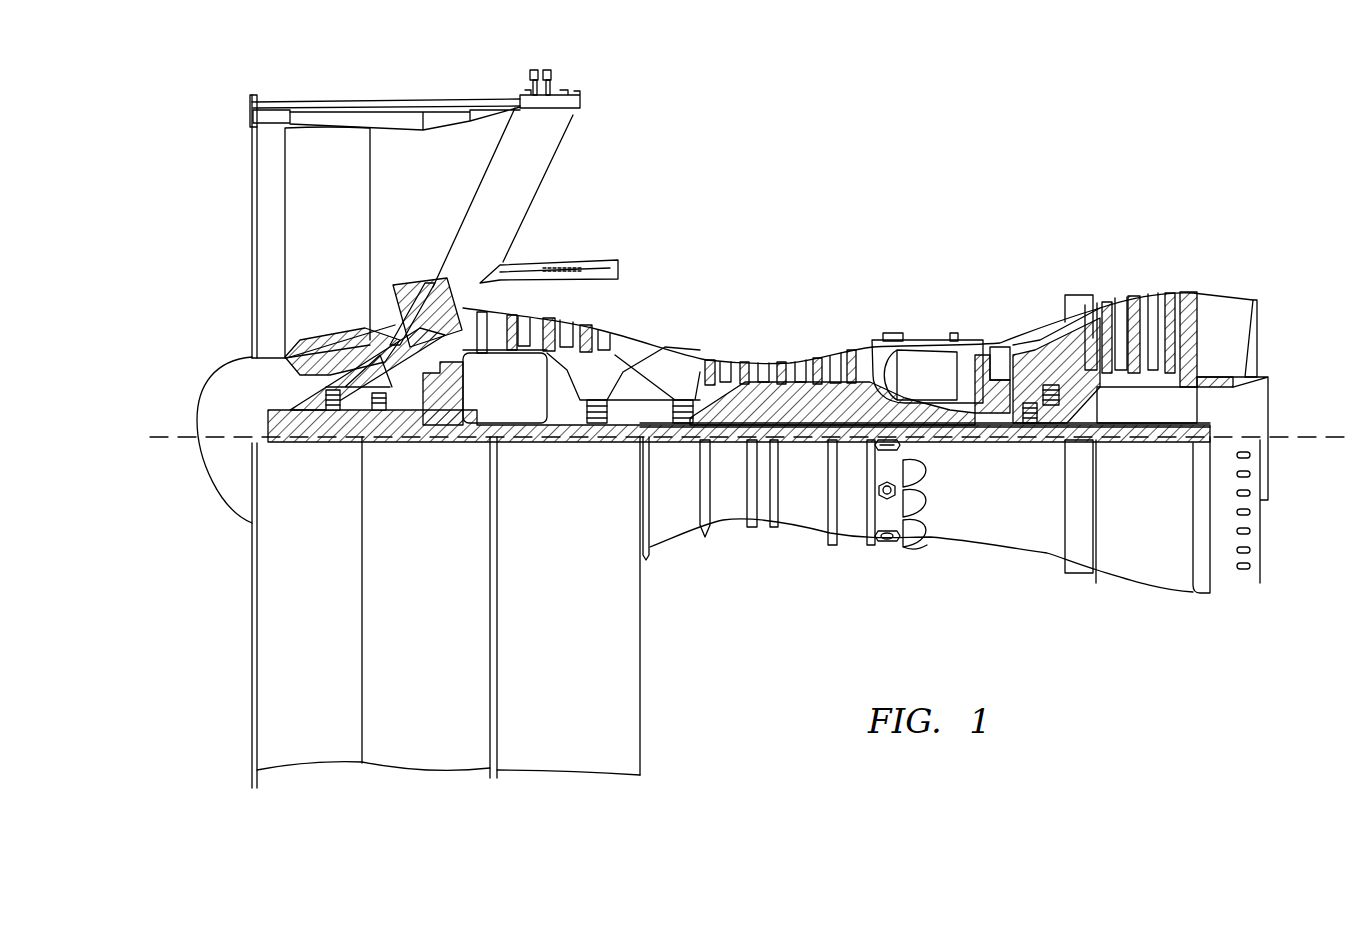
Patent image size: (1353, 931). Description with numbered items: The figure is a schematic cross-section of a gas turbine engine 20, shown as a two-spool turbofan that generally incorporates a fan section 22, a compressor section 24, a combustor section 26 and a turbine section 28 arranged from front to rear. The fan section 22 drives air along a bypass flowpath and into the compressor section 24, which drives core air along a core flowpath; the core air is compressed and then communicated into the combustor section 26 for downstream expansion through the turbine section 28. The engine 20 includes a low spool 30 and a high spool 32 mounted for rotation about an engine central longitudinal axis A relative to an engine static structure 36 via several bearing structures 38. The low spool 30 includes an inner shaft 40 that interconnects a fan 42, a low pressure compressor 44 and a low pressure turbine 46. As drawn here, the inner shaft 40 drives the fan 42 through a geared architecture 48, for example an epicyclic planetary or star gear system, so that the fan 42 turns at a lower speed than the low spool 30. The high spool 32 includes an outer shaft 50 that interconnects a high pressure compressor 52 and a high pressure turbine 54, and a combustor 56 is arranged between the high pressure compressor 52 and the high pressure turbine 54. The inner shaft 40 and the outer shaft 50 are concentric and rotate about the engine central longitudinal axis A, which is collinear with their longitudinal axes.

The gas turbine engine 20 is at (962, 143).
The fan section 22 is at (244, 83).
The compressor section 24 is at (500, 223).
The combustor section 26 is at (983, 223).
The turbine section 28 is at (1198, 223).
The low spool 30 is at (810, 443).
The high spool 32 is at (830, 358).
The engine static structure 36 is at (857, 542).
The bearing structures 38 is at (336, 412).
The inner shaft 40 is at (668, 440).
The fan 42 is at (333, 252).
The low pressure compressor 44 is at (570, 330).
The low pressure turbine 46 is at (1130, 302).
The geared architecture 48 is at (440, 413).
The outer shaft 50 is at (937, 430).
The high pressure compressor 52 is at (795, 405).
The high pressure turbine 54 is at (996, 343).
The combustor 56 is at (925, 375).
The engine central longitudinal axis A is at (1338, 432).